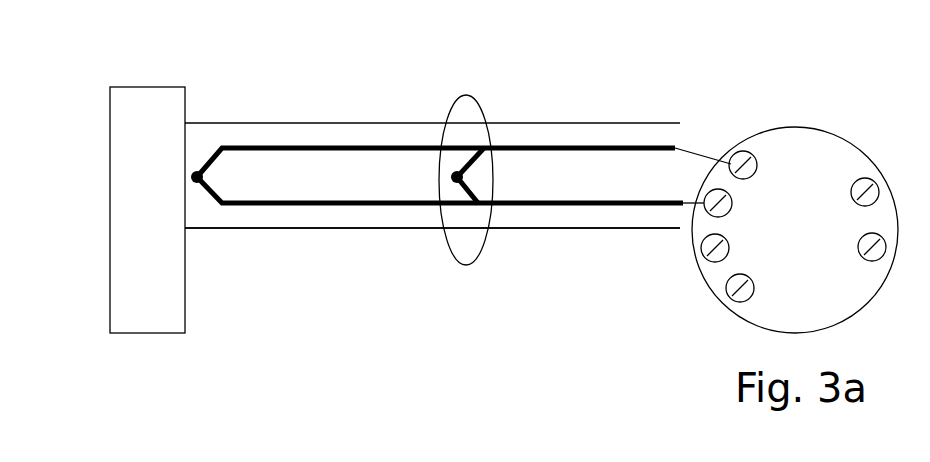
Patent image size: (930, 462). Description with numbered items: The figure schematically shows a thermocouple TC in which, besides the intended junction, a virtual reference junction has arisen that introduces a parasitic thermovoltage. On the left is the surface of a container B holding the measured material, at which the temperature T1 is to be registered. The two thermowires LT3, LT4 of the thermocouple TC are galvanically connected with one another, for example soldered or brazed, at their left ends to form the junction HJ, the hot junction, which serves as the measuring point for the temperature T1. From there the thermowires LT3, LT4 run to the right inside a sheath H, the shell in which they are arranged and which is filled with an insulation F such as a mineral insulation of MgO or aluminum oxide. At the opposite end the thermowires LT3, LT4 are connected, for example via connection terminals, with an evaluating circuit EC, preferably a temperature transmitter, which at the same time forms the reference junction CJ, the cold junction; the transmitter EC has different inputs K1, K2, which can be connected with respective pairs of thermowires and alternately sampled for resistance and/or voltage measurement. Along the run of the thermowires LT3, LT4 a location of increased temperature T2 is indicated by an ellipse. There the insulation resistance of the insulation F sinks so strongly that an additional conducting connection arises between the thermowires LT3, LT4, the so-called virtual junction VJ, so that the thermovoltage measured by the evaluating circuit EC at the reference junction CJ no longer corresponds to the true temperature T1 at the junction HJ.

The container B is at (150, 333).
The temperature at the measuring point T1 is at (140, 214).
The housing / sheath H is at (255, 230).
The insulation F is at (316, 231).
The thermocouple TC is at (464, 178).
The first thermowire LT3 is at (556, 148).
The second thermowire LT4 is at (523, 205).
The junction HJ is at (203, 145).
The virtual junction VJ is at (469, 131).
The increased temperature T2 is at (468, 257).
The evaluating circuit EC is at (751, 211).
The first input K1 is at (706, 285).
The second input K2 is at (722, 130).
The reference junction CJ is at (673, 222).